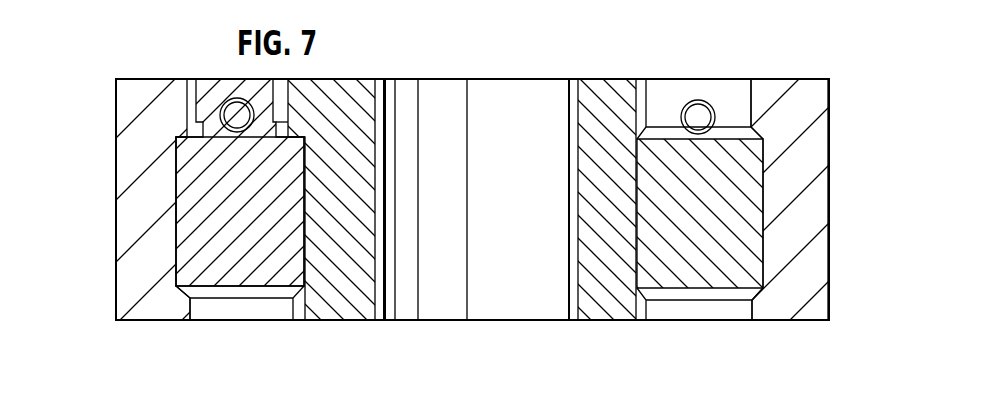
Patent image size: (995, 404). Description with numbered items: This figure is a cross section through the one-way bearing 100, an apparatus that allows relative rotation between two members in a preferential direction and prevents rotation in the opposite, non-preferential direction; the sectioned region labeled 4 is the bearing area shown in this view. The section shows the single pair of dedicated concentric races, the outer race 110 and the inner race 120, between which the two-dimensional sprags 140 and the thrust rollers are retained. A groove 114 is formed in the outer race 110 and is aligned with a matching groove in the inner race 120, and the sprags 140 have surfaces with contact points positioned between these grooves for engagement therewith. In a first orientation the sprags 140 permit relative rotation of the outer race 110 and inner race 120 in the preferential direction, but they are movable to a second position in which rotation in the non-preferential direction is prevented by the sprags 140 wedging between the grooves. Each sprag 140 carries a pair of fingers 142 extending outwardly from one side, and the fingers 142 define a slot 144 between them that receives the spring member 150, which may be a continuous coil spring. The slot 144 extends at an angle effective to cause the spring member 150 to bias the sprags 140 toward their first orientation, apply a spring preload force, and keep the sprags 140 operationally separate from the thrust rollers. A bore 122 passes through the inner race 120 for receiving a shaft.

The one-way bearing 100 is at (764, 76).
The outer race 110 is at (829, 183).
The groove 114 is at (763, 148).
The inner race 120 is at (590, 79).
The bore 122 is at (573, 150).
The two-dimensional sprag 140 is at (187, 237).
The finger 142 is at (263, 79).
The slot 144 is at (243, 137).
The spring member 150 is at (235, 98).
The bolt 4 is at (633, 222).